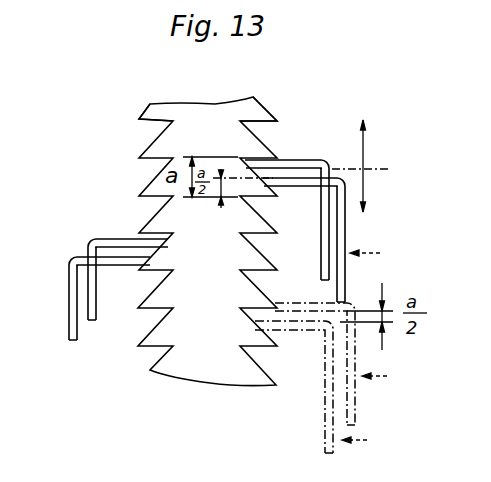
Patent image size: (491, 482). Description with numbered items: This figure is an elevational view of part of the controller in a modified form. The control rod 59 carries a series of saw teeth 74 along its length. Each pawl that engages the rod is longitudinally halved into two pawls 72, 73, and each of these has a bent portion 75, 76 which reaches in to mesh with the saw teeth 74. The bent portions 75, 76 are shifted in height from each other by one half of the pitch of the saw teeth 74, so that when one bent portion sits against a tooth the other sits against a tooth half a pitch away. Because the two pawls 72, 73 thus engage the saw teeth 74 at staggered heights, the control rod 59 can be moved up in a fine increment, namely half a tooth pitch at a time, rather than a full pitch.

The control rod 59 is at (209, 112).
The pawl 72 is at (220, 208).
The pawl 73 is at (223, 198).
The saw teeth 74 is at (145, 125).
The bent portion 75 is at (108, 249).
The bent portion 76 is at (125, 238).